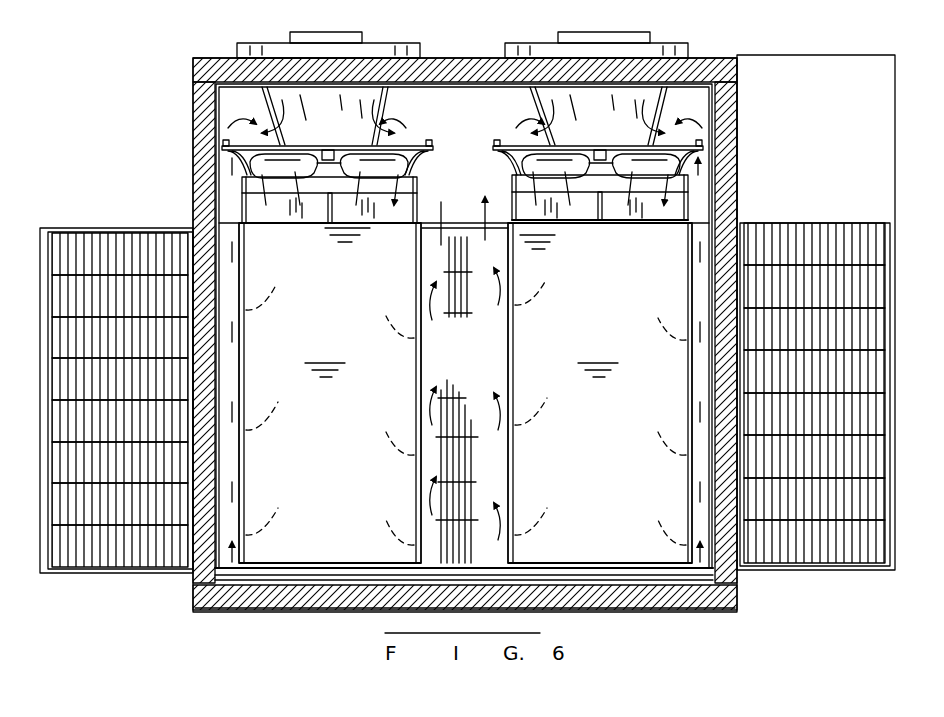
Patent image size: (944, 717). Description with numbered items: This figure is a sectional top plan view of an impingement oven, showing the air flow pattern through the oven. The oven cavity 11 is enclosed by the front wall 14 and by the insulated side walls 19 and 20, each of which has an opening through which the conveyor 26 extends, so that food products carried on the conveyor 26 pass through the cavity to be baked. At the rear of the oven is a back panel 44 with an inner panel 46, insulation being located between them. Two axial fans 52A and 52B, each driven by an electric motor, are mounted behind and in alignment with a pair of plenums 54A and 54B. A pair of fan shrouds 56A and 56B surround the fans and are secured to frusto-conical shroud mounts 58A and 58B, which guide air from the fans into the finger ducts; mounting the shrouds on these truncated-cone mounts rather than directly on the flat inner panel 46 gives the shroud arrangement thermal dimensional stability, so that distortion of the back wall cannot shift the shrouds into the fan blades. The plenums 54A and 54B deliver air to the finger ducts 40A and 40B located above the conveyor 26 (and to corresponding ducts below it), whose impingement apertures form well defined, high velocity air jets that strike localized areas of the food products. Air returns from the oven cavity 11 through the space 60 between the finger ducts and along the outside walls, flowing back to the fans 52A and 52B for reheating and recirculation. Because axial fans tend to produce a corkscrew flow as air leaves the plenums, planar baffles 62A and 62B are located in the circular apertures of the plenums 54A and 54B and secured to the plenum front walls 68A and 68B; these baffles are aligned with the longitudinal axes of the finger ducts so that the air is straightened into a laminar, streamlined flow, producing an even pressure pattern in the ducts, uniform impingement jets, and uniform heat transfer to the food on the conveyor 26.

The oven cavity 11 is at (316, 532).
The front wall 14 is at (345, 613).
The side wall 19 is at (192, 128).
The side wall 20 is at (737, 125).
The conveyor 26 is at (103, 378).
The finger duct 40A is at (298, 347).
The finger duct 40B is at (572, 347).
The back panel 44 is at (462, 56).
The inner panel 46 is at (690, 86).
The axial fan 52A is at (279, 172).
The axial fan 52B is at (652, 168).
The plenum 54A is at (255, 207).
The plenum 54B is at (635, 208).
The fan shroud 56A is at (227, 158).
The fan shroud 56B is at (687, 156).
The frusto-conical shroud mount 58A is at (386, 100).
The frusto-conical shroud mount 58B is at (536, 100).
The space 60 is at (449, 358).
The baffle 62A is at (328, 208).
The baffle 62B is at (600, 208).
The front wall of plenum 68A is at (393, 223).
The front wall of plenum 68B is at (558, 220).